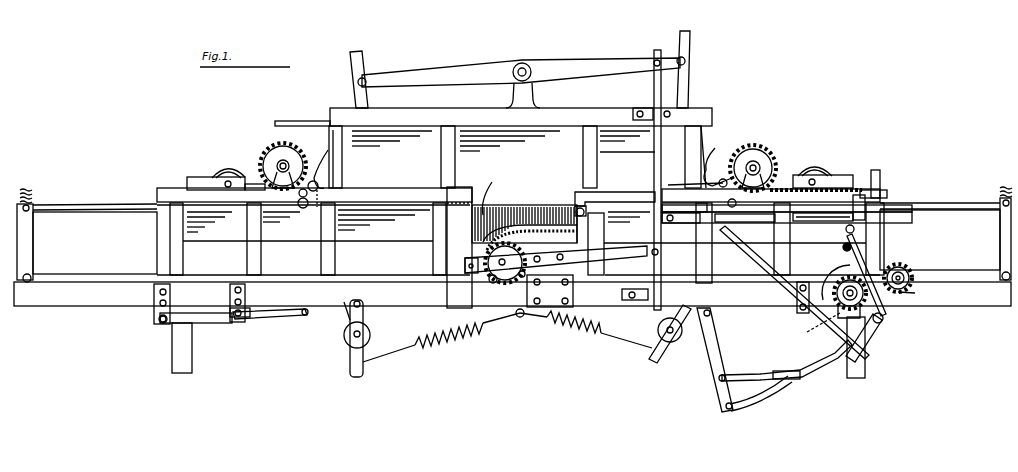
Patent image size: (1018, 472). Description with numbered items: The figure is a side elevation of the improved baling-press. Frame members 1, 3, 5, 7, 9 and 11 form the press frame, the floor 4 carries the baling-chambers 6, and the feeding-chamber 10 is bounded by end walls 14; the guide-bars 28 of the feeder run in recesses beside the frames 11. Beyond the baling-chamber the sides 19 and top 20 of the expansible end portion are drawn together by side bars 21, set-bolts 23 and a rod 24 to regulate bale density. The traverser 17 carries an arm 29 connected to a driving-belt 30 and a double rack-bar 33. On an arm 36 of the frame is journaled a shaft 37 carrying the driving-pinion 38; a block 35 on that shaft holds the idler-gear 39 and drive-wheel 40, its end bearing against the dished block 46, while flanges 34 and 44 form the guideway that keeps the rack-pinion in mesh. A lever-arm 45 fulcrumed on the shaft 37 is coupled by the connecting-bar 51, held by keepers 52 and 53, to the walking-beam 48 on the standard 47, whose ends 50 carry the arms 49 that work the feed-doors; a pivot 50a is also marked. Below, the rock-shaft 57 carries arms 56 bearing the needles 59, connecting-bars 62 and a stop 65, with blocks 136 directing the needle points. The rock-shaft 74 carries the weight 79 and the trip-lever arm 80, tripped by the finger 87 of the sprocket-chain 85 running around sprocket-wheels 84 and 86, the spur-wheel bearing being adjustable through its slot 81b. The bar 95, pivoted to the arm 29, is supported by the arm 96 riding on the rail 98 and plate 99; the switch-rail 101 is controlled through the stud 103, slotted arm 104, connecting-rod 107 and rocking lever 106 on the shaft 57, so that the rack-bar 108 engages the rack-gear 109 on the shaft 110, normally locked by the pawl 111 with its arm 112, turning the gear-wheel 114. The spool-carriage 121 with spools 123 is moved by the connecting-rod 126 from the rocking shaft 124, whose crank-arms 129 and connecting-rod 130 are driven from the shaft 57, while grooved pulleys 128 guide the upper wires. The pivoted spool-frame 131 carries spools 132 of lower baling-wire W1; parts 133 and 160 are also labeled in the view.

The frame-piece 1 is at (512, 255).
The press frame member 3 is at (574, 52).
The floor 4 is at (660, 46).
The press frame member 5 is at (533, 284).
The baling-chamber 6 is at (524, 242).
The press frame member 7 is at (518, 195).
The press frame member 9 is at (515, 157).
The feeding-chamber 10 is at (501, 148).
The frame 11 is at (521, 117).
The end wall 14 is at (328, 142).
The traverser 17 is at (491, 193).
The side of extended baling-chamber portion 19 is at (516, 242).
The top of extended baling-chamber portion 20 is at (98, 206).
The side bar 21 is at (33, 243).
The set-bolt 23 is at (32, 194).
The rod 24 is at (31, 282).
The guide-bar 28 is at (302, 115).
The stud or arm 29 is at (573, 200).
The driving-belt 30 is at (508, 208).
The double rack-bar 33 is at (556, 228).
The flange 34 is at (525, 222).
The block 35 is at (494, 283).
The arm 36 is at (545, 300).
The shaft 37 is at (524, 320).
The driving-pinion 38 is at (585, 226).
The idler-gear 39 is at (523, 280).
The drive-wheel 40 is at (505, 262).
The flange 44 is at (478, 240).
The lever-arm 45 is at (622, 250).
The dished block 46 is at (459, 247).
The standard 47 is at (536, 91).
The walking-beam 48 is at (521, 72).
The arm 49 is at (364, 58).
The walking-beam end arm 50 is at (366, 86).
The pivot pin 50a is at (655, 60).
The connecting-bar 51 is at (650, 153).
The keeper 52 is at (640, 110).
The keeper 53 is at (623, 296).
The arm 56 is at (210, 323).
The rock-shaft 57 is at (158, 321).
The needle 59 is at (320, 188).
The connecting-bar 62 is at (262, 320).
The stop 65 is at (788, 371).
The rock-shaft 74 is at (246, 308).
The weight 79 is at (172, 350).
The trip-lever arm 80 is at (836, 286).
The slot 81b is at (922, 293).
The sprocket-wheel 84 is at (912, 280).
The sprocket-chain 85 is at (904, 270).
The sprocket-wheel 86 is at (842, 303).
The finger 87 is at (813, 328).
The bar 95 is at (630, 194).
The arm 96 is at (860, 195).
The rail 98 is at (745, 228).
The plate 99 is at (682, 218).
The switch-rail 101 is at (795, 226).
The stud 103 is at (847, 236).
The arm 104 is at (842, 250).
The rocking lever 106 is at (866, 340).
The connecting-rod 107 is at (862, 262).
The rack-bar 108 is at (882, 178).
The rack-gear 109 is at (770, 158).
The shaft 110 is at (277, 164).
The pawl 111 is at (697, 176).
The arm 112 is at (888, 194).
The gear-wheel 114 is at (275, 150).
The spool-carriage 121 is at (520, 183).
The spool 123 is at (218, 172).
The rocking shaft 124 is at (740, 236).
The connecting-rod 126 is at (818, 156).
The grooved pulley 128 is at (307, 208).
The crank-arm 129 is at (684, 223).
The connecting-rod 130 is at (782, 282).
The spool-frame 131 is at (351, 360).
The spool 132 is at (370, 332).
The spring 133 is at (507, 336).
The block 136 is at (322, 163).
The bar 160 is at (804, 237).
The lower baling-wire W1 is at (345, 318).